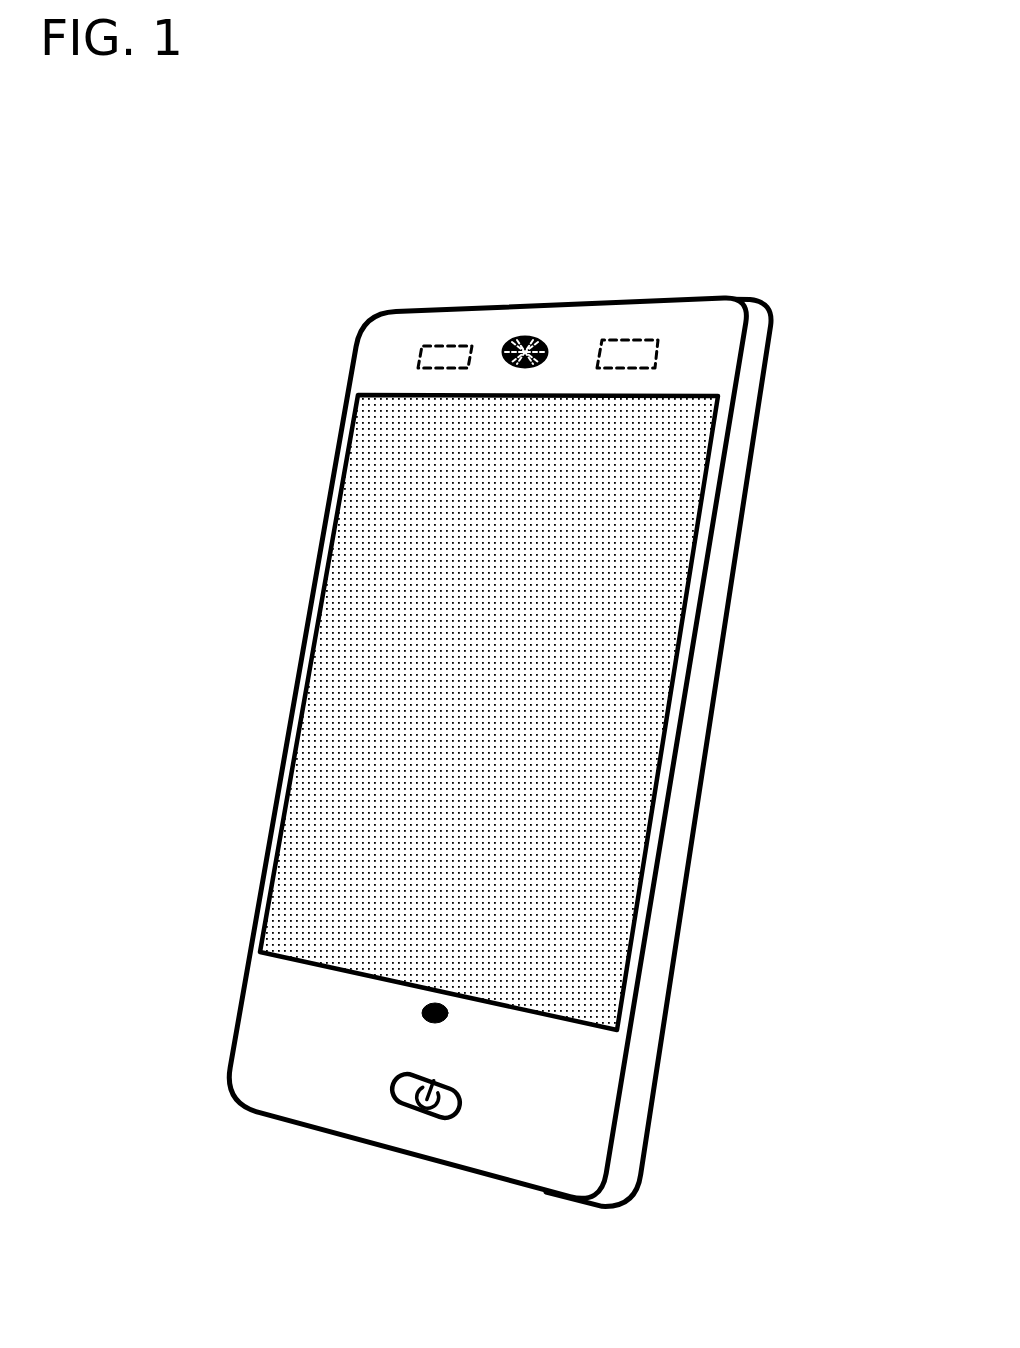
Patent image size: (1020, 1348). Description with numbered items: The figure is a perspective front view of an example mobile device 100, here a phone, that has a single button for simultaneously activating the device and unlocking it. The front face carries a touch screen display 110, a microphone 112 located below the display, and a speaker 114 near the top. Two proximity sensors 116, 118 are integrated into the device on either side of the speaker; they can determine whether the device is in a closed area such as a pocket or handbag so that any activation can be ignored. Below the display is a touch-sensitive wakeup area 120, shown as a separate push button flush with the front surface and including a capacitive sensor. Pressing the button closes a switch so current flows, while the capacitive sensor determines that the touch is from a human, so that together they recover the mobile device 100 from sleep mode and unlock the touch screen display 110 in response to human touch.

The mobile device 100 is at (707, 317).
The touch screen display 110 is at (386, 489).
The microphone 112 is at (448, 1013).
The speaker 114 is at (522, 337).
The proximity sensor 116 is at (452, 346).
The proximity sensor 118 is at (632, 343).
The touch-sensitive wakeup area 120 is at (408, 1088).